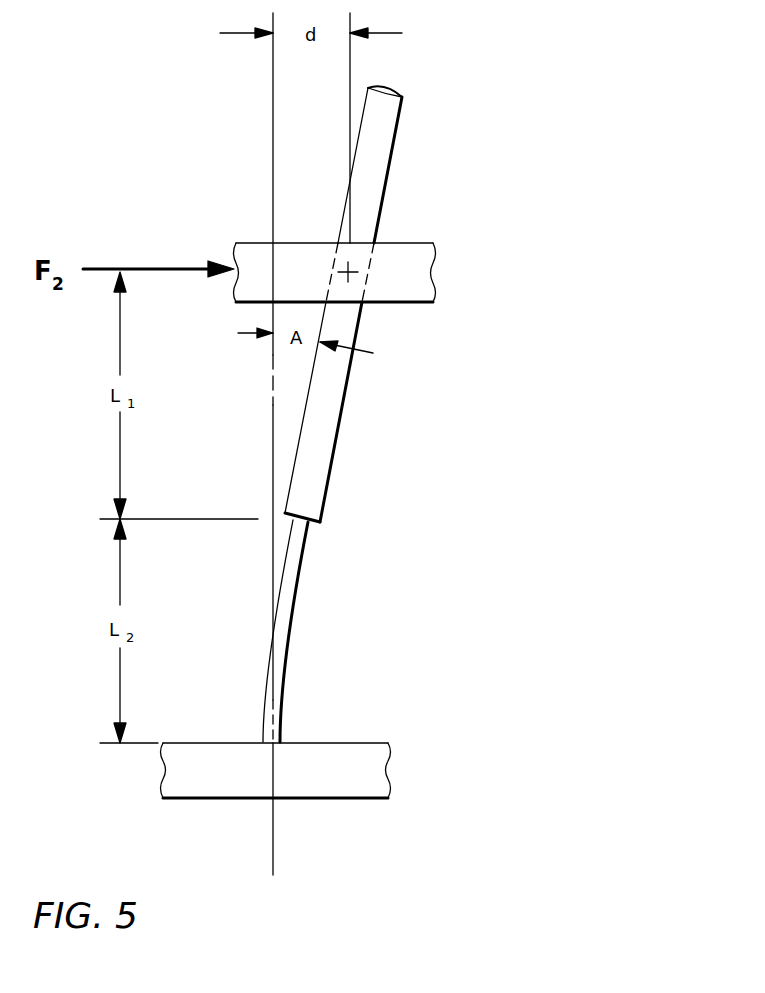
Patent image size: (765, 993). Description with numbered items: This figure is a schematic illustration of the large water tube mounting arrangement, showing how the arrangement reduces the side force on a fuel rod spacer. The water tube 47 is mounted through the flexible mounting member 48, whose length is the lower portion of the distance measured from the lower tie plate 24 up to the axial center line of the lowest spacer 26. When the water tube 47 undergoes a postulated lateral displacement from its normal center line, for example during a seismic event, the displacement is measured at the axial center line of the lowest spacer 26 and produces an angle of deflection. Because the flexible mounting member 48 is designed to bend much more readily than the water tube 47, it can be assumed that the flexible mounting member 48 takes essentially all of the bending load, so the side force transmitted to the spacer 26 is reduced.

The spacer 26 is at (435, 280).
The lower tie plate 24 is at (390, 770).
The water tube 47 is at (335, 438).
The flexible mounting member 48 is at (297, 580).